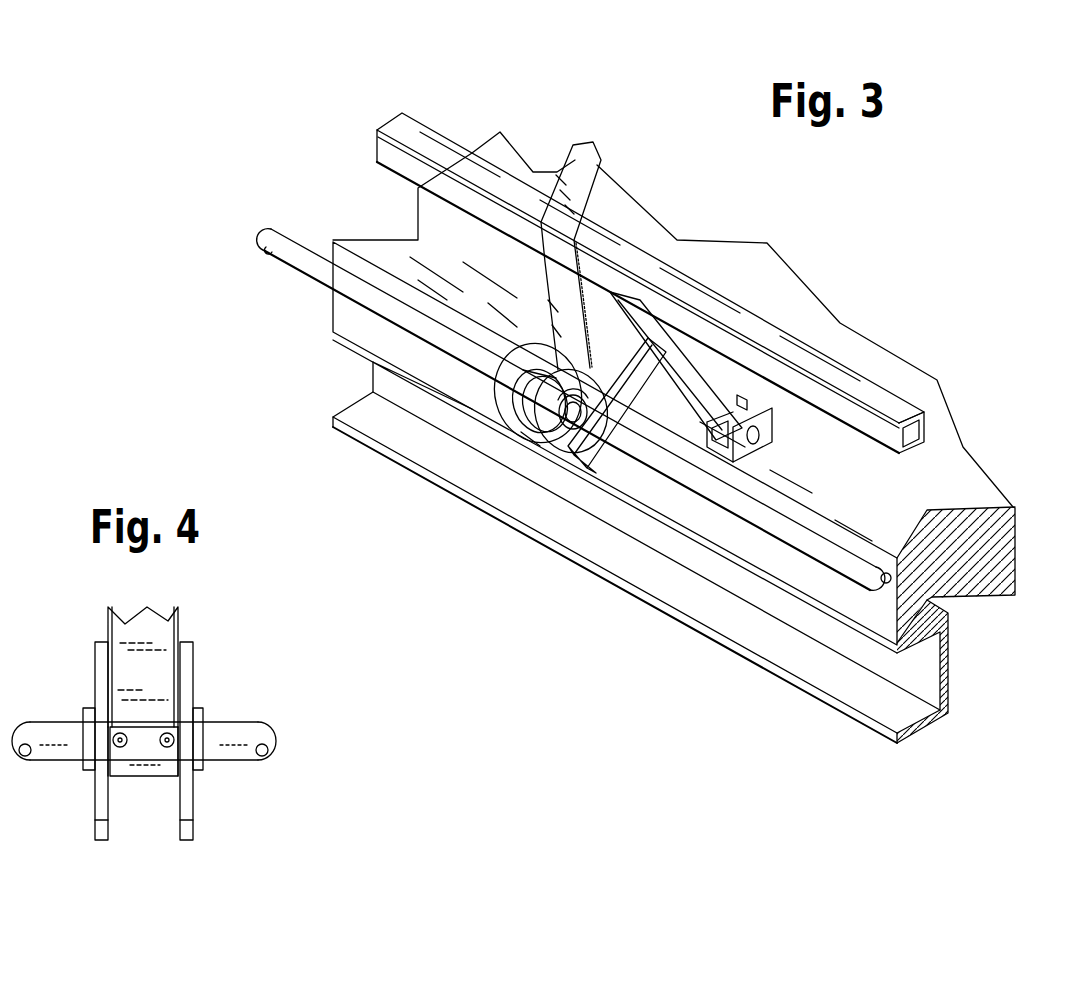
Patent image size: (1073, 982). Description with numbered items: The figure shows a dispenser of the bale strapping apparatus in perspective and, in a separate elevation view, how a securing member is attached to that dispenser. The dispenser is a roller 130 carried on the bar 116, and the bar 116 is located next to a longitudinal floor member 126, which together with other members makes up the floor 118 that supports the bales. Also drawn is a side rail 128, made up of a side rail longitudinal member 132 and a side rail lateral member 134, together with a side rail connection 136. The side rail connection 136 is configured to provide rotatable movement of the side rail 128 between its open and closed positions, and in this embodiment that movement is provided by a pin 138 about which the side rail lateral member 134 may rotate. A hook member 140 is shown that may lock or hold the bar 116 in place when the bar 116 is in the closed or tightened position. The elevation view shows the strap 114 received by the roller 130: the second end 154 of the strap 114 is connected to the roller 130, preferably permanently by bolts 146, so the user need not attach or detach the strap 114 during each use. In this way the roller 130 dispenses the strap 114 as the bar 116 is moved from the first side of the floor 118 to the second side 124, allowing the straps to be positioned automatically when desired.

In FIG. 3, the strap 114 is at (601, 163).
In FIG. 4, the strap 114 is at (168, 628).
In FIG. 3, the bar 116 is at (313, 266).
In FIG. 4, the bar 116 is at (232, 728).
In FIG. 3, the floor 118 is at (940, 455).
In FIG. 3, the second side 124 is at (360, 365).
In FIG. 3, the longitudinal member 126 is at (947, 690).
In FIG. 3, the side rail 128 is at (845, 373).
In FIG. 3, the roller 130 is at (526, 455).
In FIG. 4, the roller 130 is at (205, 803).
In FIG. 3, the side rail longitudinal member 132 is at (680, 270).
In FIG. 3, the side rail lateral member 134 is at (700, 368).
In FIG. 3, the side rail connection 136 is at (778, 465).
In FIG. 3, the pin 138 is at (760, 431).
In FIG. 3, the hook member 140 is at (614, 452).
In FIG. 4, the bolt 146 is at (118, 746).
In FIG. 3, the second end 154 is at (530, 398).
In FIG. 4, the second end 154 is at (150, 778).